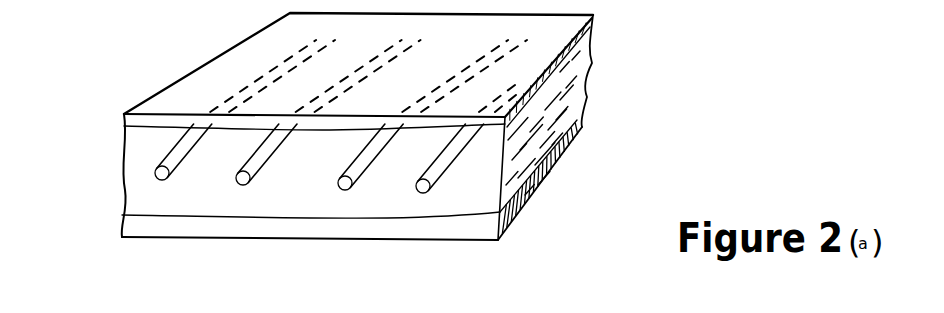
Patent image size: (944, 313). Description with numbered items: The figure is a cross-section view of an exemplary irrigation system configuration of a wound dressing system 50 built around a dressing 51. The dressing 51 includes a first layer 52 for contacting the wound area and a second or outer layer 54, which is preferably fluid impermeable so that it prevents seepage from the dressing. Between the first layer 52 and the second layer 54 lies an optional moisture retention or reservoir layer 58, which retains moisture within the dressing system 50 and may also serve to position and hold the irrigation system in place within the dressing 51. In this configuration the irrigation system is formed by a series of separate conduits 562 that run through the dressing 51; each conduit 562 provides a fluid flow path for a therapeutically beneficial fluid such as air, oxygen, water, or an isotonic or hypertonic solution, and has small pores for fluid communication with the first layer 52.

The wound dressing system 50 is at (584, 166).
The dressing 51 is at (590, 66).
The first layer 52 is at (120, 228).
The second layer 54 is at (122, 120).
The moisture retention layer 58 is at (121, 174).
The conduits 562 is at (266, 143).